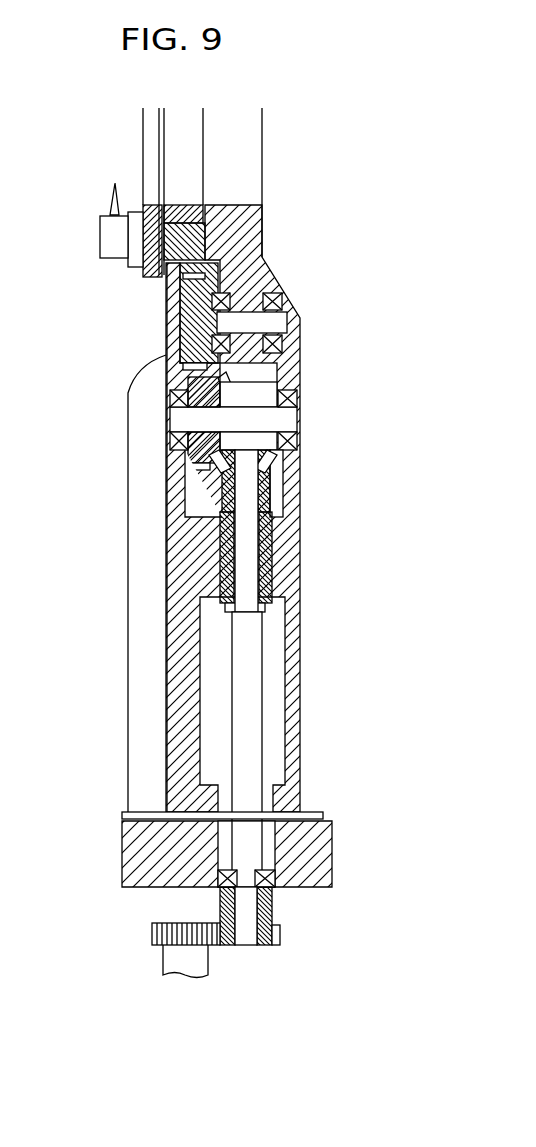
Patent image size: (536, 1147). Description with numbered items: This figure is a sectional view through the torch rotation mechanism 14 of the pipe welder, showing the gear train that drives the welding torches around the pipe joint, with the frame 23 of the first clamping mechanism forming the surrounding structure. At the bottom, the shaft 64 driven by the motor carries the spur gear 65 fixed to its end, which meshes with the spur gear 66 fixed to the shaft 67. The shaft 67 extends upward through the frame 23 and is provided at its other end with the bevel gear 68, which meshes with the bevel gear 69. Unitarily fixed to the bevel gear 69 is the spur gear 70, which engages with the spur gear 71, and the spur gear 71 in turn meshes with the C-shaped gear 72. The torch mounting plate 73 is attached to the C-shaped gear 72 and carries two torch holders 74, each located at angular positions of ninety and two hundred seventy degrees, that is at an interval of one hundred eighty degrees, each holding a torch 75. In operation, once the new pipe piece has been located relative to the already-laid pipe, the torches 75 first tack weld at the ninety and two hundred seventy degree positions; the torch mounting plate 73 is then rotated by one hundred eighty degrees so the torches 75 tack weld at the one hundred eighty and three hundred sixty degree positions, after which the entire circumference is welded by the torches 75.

The torch rotation mechanism 14 is at (195, 425).
The frame 23 is at (300, 568).
The shaft 64 is at (163, 965).
The spur gear 65 is at (152, 930).
The spur gear 66 is at (282, 930).
The shaft 67 is at (262, 725).
The bevel gear 68 is at (283, 493).
The bevel gear 69 is at (225, 387).
The spur gear 70 is at (185, 493).
The spur gear 71 is at (190, 337).
The C-shaped gear 72 is at (150, 243).
The torch mounting plate 73 is at (143, 270).
The torch holder 74 is at (100, 216).
The torch 75 is at (112, 188).